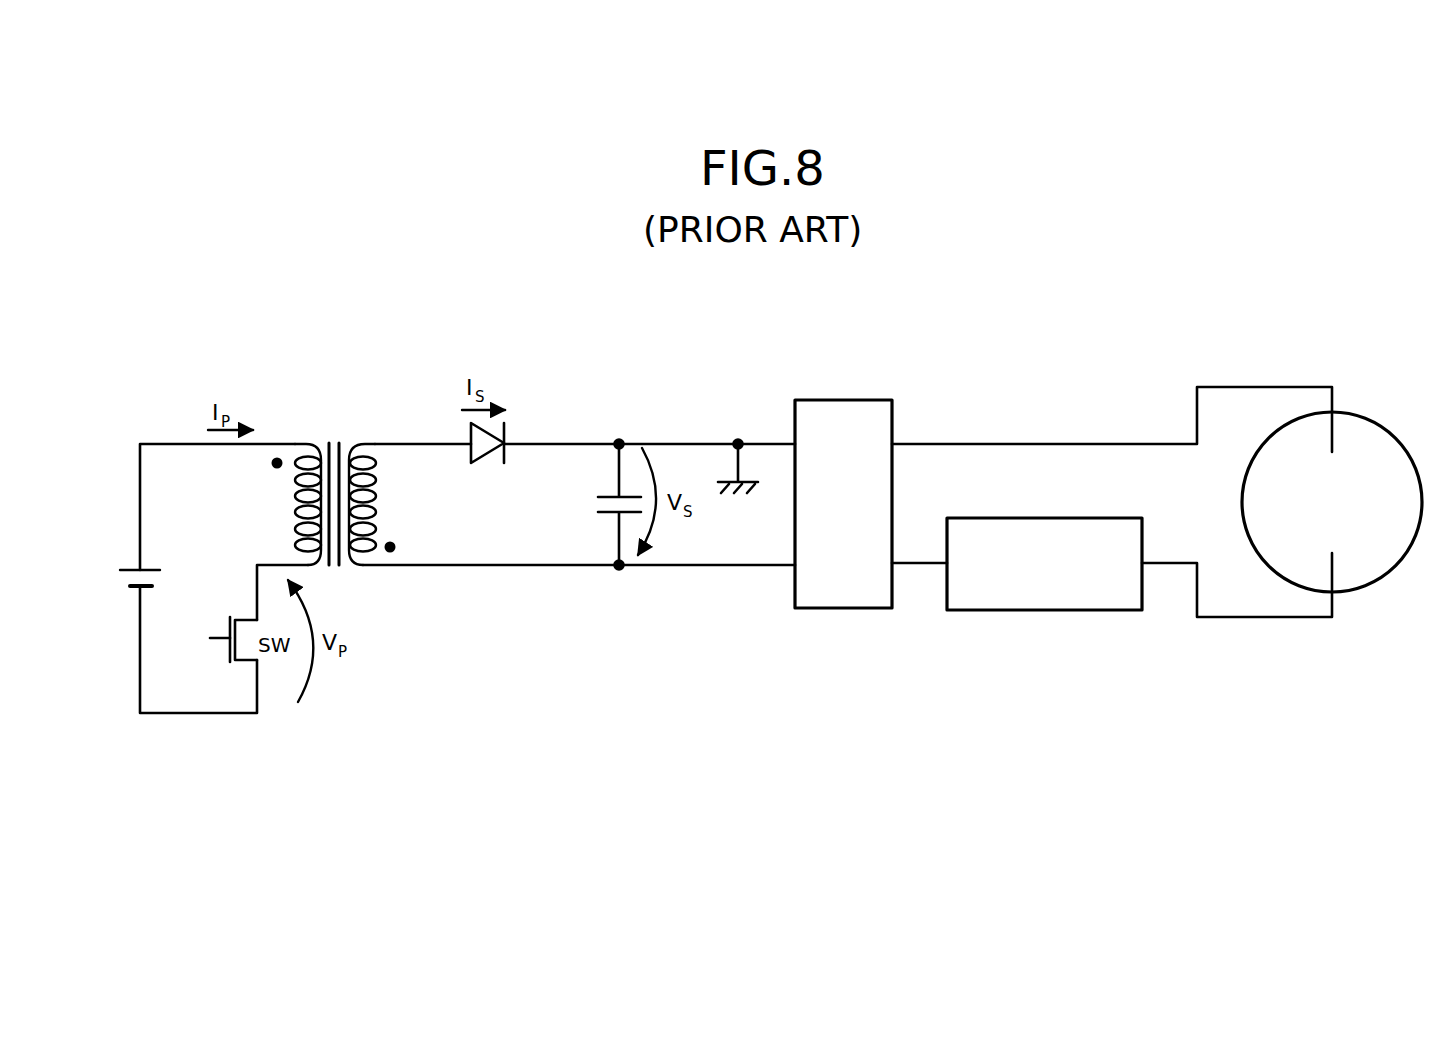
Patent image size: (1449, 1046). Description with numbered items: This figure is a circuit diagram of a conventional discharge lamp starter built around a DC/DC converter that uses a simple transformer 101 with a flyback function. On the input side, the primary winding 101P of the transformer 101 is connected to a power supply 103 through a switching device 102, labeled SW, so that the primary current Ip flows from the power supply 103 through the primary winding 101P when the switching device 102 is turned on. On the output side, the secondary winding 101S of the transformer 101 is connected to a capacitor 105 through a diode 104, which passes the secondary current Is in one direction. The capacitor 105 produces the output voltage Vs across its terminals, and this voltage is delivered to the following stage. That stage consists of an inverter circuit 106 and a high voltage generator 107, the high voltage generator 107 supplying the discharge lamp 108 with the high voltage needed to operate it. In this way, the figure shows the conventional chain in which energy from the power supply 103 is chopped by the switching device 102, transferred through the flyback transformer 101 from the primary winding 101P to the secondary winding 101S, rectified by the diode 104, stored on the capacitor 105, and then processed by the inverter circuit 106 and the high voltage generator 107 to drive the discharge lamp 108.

The transformer 101 is at (331, 446).
The primary winding 101P is at (303, 455).
The secondary winding 101S is at (374, 482).
The switching device (SW) 102 is at (220, 655).
The power supply 103 is at (122, 568).
The diode 104 is at (487, 465).
The capacitor 105 is at (595, 504).
The inverter circuit 106 is at (846, 400).
The high voltage generator 107 is at (1043, 612).
The discharge lamp 108 is at (1402, 443).